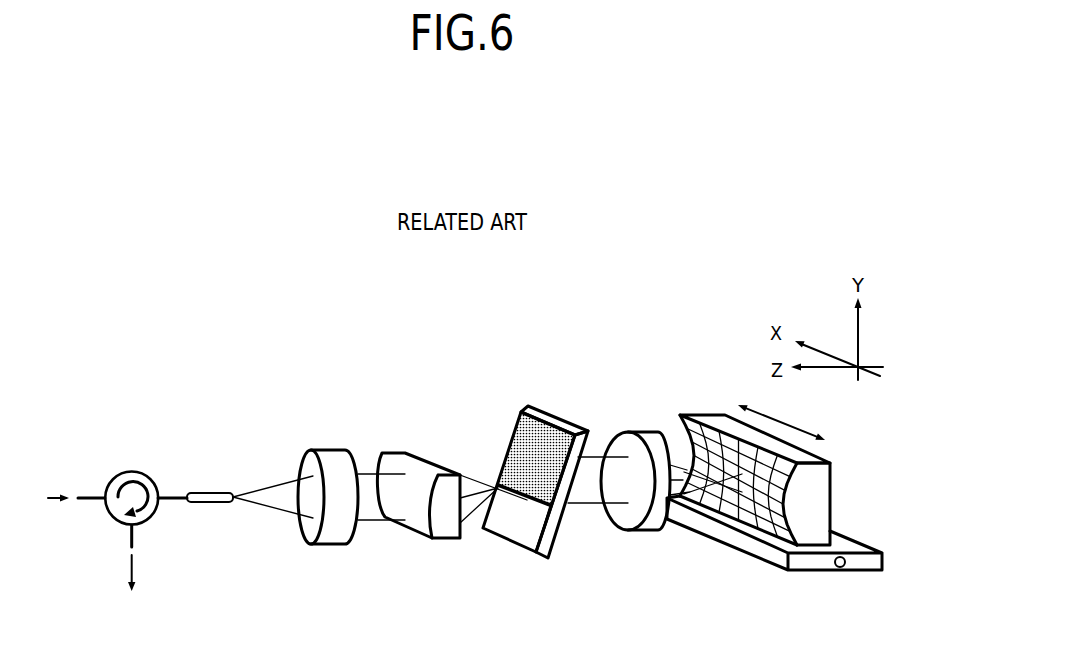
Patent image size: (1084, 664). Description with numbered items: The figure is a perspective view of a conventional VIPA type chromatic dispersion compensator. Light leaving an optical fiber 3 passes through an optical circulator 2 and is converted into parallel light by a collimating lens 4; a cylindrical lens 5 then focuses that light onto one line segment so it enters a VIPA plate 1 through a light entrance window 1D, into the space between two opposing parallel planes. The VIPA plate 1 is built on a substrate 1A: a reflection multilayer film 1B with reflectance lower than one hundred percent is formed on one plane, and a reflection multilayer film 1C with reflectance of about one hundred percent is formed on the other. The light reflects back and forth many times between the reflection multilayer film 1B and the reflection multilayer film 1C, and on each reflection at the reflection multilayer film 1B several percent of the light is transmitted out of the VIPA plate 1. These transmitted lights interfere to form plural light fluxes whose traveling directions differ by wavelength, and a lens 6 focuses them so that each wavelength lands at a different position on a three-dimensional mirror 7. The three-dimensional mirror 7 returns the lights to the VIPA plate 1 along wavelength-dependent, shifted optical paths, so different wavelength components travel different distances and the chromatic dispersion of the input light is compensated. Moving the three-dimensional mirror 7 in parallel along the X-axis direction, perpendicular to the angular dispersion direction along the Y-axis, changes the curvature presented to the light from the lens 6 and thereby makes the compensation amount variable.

The VIPA plate 1 is at (566, 400).
The substrate 1A is at (542, 552).
The reflection multilayer film 1B is at (560, 528).
The reflection multilayer film 1C is at (523, 438).
The light entrance window 1D is at (517, 518).
The optical circulator 2 is at (130, 471).
The optical fiber 3 is at (205, 491).
The collimating lens 4 is at (320, 448).
The cylindrical lens 5 is at (395, 451).
The lens 6 is at (638, 431).
The three-dimensional mirror 7 is at (703, 413).